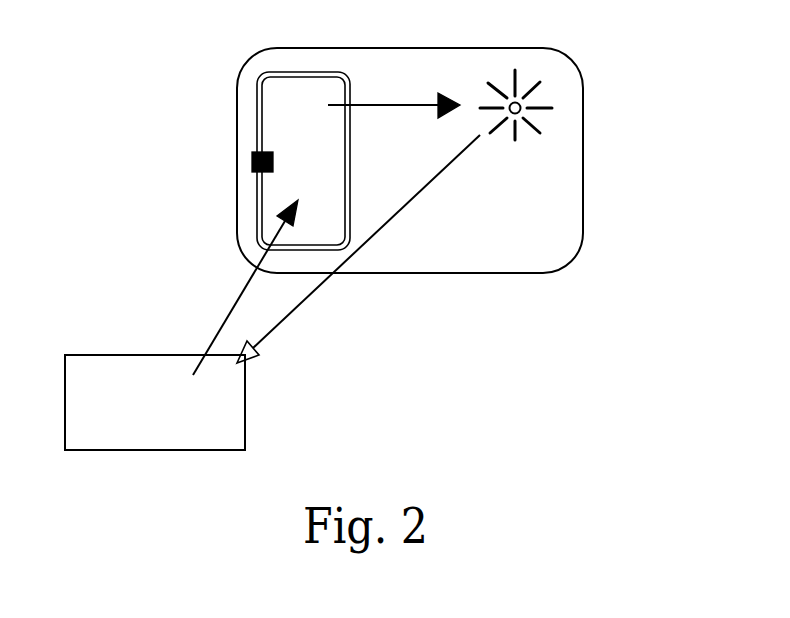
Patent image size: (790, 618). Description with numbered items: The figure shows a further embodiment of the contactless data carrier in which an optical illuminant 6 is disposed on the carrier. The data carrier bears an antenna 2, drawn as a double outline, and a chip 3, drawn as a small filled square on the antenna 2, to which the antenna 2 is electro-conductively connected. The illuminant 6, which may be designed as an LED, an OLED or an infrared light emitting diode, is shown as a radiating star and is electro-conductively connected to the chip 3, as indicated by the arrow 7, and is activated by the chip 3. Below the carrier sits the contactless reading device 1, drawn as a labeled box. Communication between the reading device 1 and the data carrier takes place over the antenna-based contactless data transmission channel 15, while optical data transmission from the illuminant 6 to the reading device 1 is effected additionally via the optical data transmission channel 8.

The reading device 1 is at (123, 353).
The antenna 2 is at (258, 113).
The chip 3 is at (252, 173).
The optical illuminant 6 is at (520, 128).
The arrow 7 is at (390, 107).
The optical data transmission channel 8 is at (298, 310).
The antenna-based contactless data transmission channel 15 is at (223, 325).